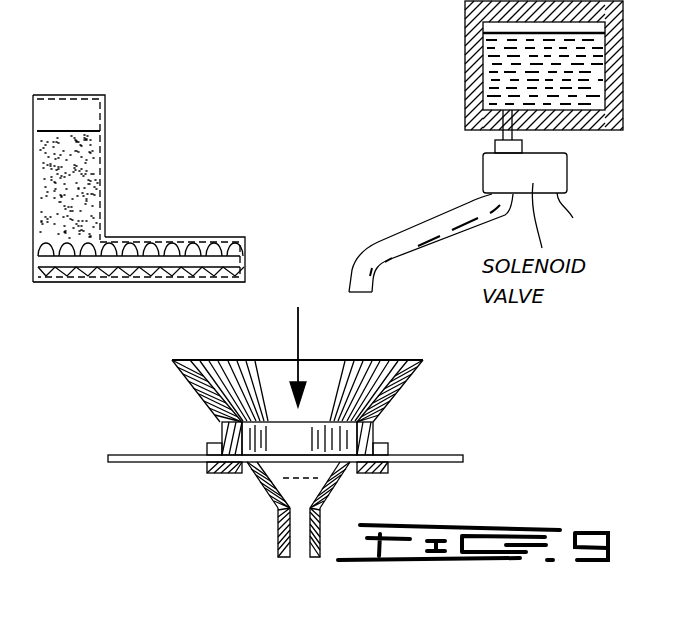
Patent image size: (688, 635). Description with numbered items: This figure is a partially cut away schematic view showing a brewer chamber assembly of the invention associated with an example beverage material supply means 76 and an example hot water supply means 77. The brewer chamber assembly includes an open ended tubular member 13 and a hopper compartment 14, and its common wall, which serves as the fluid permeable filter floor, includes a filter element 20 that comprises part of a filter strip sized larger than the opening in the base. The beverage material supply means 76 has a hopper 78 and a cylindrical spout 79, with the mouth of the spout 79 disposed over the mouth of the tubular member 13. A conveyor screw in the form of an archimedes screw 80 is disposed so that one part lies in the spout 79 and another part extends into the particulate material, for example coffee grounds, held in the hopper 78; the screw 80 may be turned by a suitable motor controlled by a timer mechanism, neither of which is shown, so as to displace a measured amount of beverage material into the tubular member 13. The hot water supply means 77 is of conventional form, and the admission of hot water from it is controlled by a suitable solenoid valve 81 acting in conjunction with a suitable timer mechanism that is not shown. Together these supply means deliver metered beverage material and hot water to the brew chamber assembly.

The open ended tubular member 13 is at (190, 378).
The hopper compartment 14 is at (278, 538).
The filter element 20 is at (152, 467).
The beverage material supply means 76 is at (113, 207).
The hot water supply means 77 is at (446, 141).
The hopper 78 is at (104, 150).
The cylindrical spout 79 is at (212, 285).
The archimedes screw 80 is at (152, 285).
The solenoid valve 81 is at (483, 172).